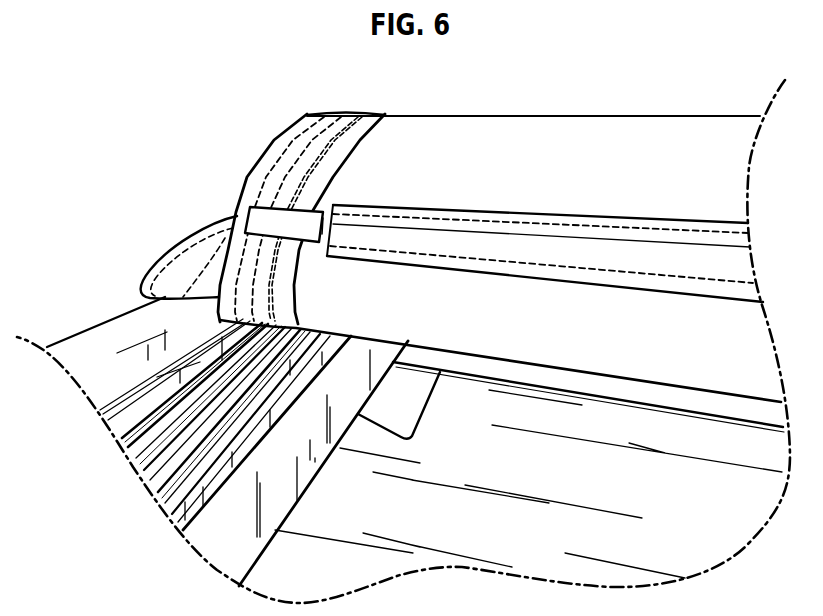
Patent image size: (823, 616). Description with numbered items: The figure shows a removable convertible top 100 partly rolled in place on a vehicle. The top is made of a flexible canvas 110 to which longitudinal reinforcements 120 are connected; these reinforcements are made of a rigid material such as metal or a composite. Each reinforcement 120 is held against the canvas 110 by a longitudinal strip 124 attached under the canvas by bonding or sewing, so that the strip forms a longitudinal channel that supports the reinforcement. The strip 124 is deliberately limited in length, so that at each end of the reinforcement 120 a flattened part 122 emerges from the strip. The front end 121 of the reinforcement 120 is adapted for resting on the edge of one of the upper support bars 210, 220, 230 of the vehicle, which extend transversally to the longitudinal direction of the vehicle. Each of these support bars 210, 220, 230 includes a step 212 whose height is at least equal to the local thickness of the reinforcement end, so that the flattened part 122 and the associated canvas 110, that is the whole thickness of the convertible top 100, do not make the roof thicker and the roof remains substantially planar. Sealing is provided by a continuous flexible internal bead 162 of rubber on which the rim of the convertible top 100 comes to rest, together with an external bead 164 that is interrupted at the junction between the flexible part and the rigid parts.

The convertible top 100 is at (592, 82).
The canvas 110 is at (455, 165).
The longitudinal reinforcements 120 is at (520, 215).
The front end 121 is at (271, 146).
The flattened part 122 is at (281, 214).
The longitudinal strip 124 is at (652, 250).
The internal bead 162 is at (186, 408).
The external bead 164 is at (189, 455).
The support bar 210 is at (135, 343).
The step 212 is at (150, 405).
The support bar 220 is at (214, 402).
The support bar 230 is at (244, 426).